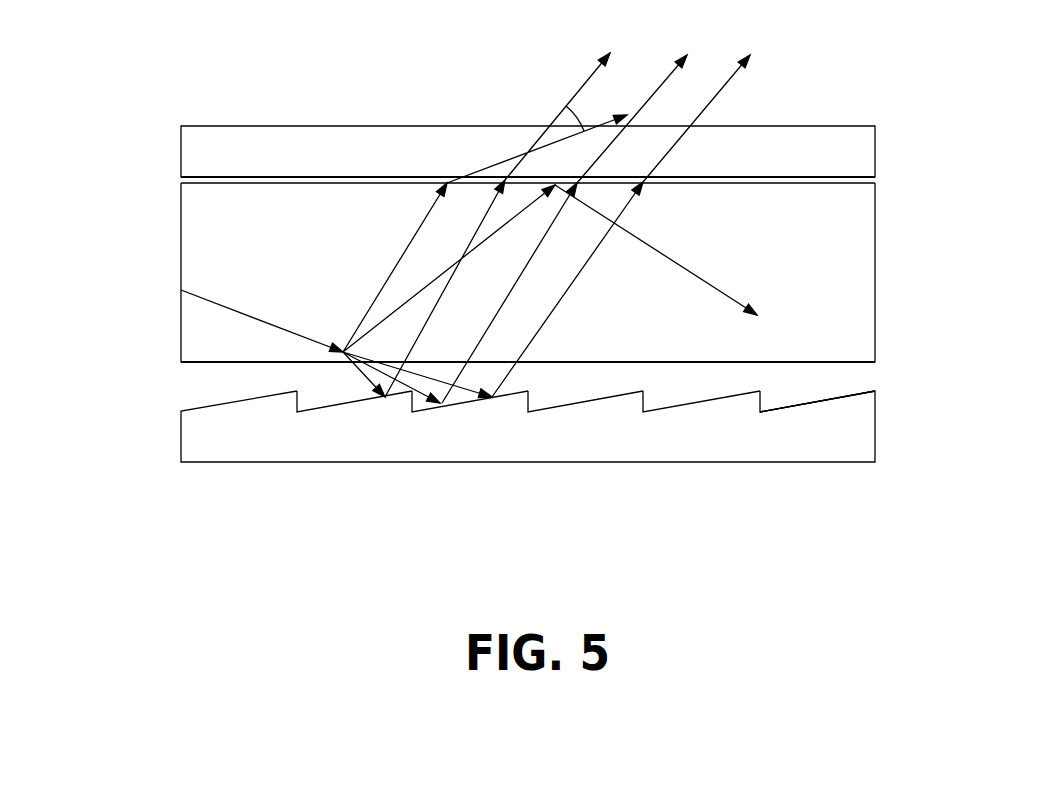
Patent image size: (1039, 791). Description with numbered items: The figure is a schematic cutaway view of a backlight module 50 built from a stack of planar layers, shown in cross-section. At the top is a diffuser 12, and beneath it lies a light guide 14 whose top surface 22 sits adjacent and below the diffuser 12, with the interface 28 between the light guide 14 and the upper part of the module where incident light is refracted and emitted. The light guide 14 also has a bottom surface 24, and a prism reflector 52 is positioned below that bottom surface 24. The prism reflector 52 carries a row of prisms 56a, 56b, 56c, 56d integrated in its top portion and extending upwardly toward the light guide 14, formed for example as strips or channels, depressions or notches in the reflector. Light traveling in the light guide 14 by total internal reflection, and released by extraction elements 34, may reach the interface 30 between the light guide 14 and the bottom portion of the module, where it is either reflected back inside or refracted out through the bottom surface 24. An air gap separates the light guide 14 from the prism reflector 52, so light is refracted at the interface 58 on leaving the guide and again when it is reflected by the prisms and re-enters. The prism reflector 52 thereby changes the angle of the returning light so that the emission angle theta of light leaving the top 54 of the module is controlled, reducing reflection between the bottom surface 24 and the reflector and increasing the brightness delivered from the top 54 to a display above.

The diffuser 12 is at (181, 142).
The top surface 22 is at (210, 182).
The interface 28 is at (875, 180).
The light guide 14 is at (181, 246).
The bottom surface 24 is at (208, 362).
The interface 30 is at (850, 377).
The extraction element 34 is at (340, 350).
The top 54 is at (883, 118).
The prism reflector 52 is at (181, 437).
The prism 56a is at (393, 405).
The prism 56b is at (513, 405).
The prism 56c is at (630, 405).
The prism 56d is at (743, 405).
The interface 58 is at (907, 412).
The backlight module 50 is at (878, 590).